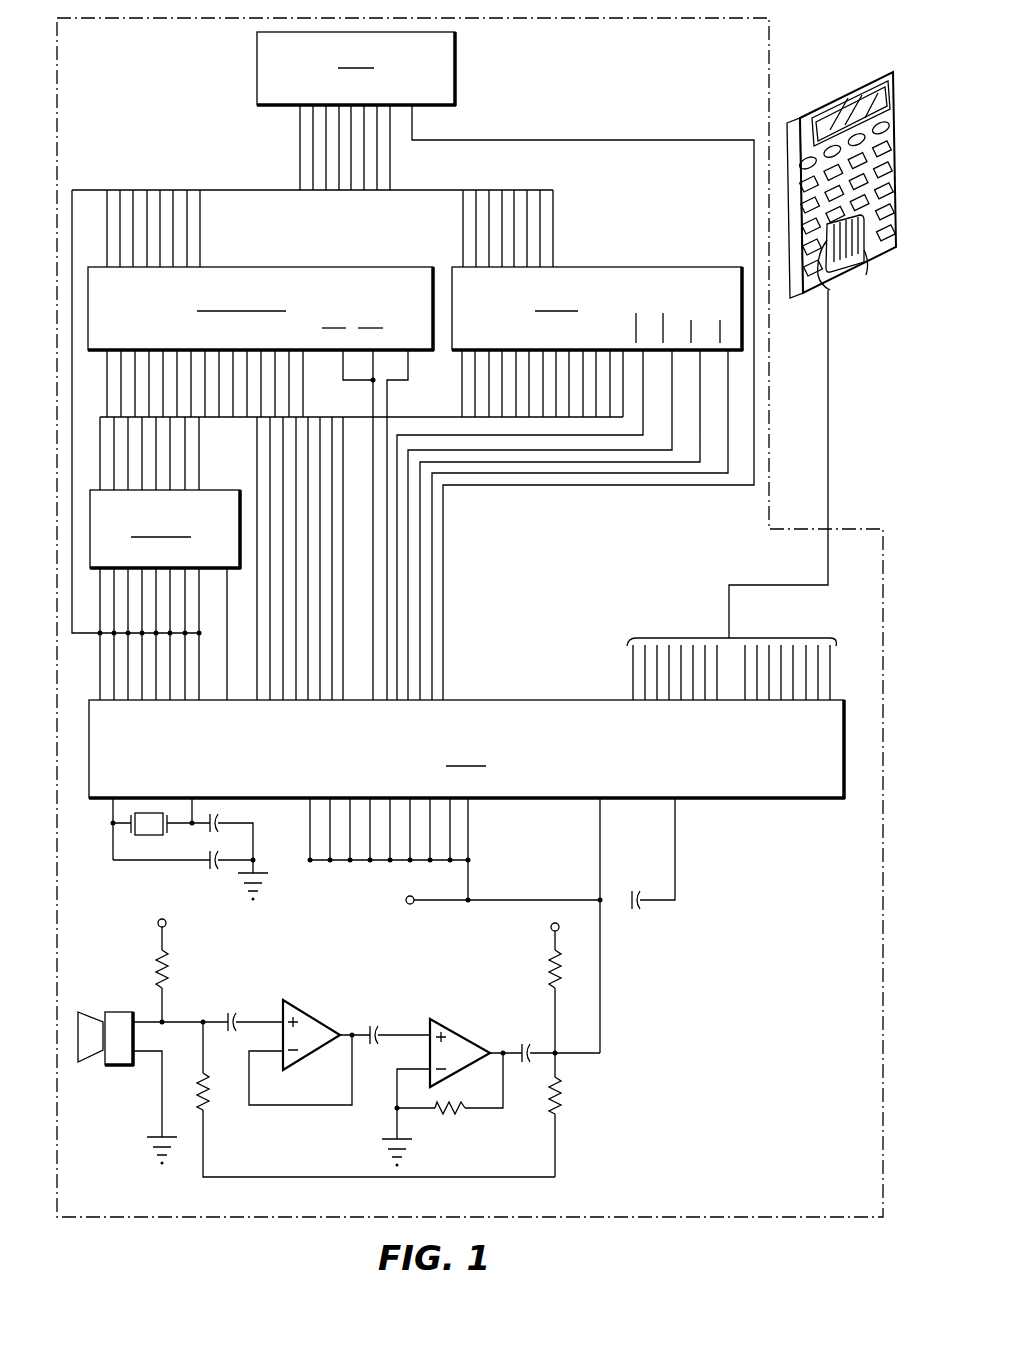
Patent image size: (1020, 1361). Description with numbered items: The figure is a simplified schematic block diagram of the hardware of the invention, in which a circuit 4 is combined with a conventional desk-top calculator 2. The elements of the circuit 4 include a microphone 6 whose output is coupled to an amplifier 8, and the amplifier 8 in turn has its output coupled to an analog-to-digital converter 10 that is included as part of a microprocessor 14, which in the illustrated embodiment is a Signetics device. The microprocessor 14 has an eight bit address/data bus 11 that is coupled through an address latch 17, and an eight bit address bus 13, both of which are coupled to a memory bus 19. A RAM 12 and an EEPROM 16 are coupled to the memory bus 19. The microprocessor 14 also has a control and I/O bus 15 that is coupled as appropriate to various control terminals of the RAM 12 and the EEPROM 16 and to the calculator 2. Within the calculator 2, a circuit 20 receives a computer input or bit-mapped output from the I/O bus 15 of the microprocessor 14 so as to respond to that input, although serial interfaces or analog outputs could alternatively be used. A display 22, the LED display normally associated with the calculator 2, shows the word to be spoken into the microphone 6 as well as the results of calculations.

The calculator 2 is at (846, 78).
The circuit 4 is at (779, 517).
The microphone 6 is at (125, 1012).
The amplifier 8 is at (326, 1008).
The analog-to-digital converter 10 is at (375, 862).
The address/data bus 11 is at (110, 652).
The RAM 12 is at (628, 267).
The address bus 13 is at (320, 613).
The microprocessor 14 is at (777, 803).
The control and I/O bus 15 is at (838, 641).
The EEPROM 16 is at (384, 267).
The address latch 17 is at (213, 490).
The memory bus 19 is at (100, 417).
The circuit within calculator 20 is at (848, 264).
The display 22 is at (457, 57).